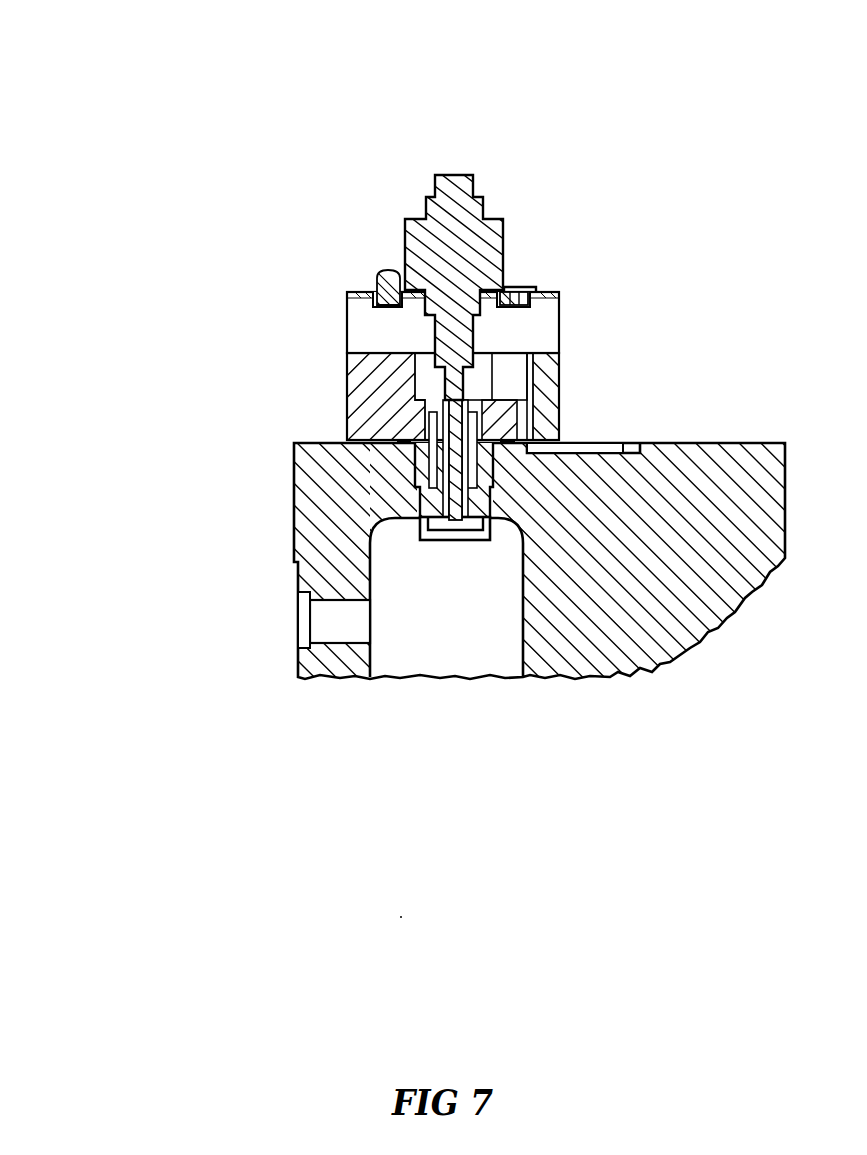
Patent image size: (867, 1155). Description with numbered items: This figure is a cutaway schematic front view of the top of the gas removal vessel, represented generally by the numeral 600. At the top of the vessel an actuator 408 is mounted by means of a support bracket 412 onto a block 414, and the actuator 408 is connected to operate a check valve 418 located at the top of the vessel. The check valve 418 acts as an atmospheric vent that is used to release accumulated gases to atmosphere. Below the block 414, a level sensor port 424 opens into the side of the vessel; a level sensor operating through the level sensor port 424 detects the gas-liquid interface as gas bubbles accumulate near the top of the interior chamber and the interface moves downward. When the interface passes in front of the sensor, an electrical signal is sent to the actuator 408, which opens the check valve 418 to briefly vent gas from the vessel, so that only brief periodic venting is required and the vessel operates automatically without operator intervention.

The cutaway schematic front view of the top of the gas removal vessel 600 is at (268, 174).
The actuator 408 is at (405, 237).
The support bracket 412 is at (345, 327).
The block 414 is at (345, 398).
The check valve 418 is at (427, 497).
The level sensor port 424 is at (298, 622).